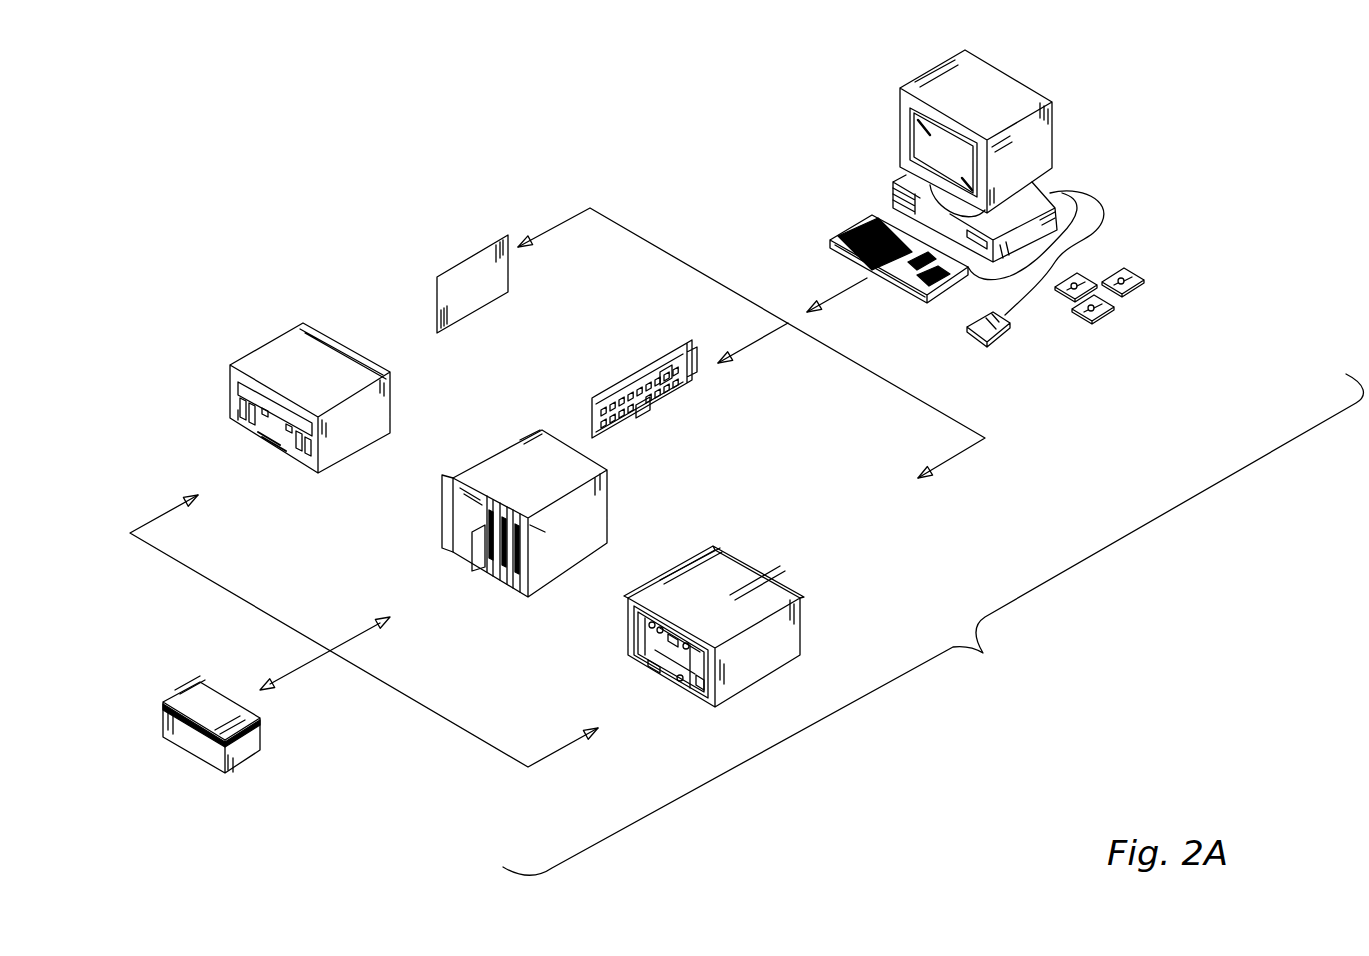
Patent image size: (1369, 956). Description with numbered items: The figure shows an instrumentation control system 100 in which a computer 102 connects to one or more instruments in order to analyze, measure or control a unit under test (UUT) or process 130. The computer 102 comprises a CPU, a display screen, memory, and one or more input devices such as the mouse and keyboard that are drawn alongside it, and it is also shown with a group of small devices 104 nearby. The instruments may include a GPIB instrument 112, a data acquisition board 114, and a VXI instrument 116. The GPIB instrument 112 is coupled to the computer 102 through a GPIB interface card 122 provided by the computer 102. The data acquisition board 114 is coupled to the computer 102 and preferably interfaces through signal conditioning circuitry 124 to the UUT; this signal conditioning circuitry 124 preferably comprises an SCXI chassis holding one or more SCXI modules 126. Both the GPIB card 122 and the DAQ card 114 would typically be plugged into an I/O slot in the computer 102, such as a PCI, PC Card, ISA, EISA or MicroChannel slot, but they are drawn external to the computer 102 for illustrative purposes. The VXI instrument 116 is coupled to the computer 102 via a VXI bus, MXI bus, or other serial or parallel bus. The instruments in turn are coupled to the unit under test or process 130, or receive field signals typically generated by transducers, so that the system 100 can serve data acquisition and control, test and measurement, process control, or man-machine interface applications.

The instrumentation control system 100 is at (746, 481).
The computer 102 is at (967, 190).
The unit under test / sensors 104 is at (1136, 274).
The GPIB instrument 112 is at (290, 378).
The data acquisition board 114 is at (625, 371).
The VXI instrument 116 is at (719, 609).
The GPIB interface card 122 is at (448, 276).
The signal conditioning circuitry 124 is at (524, 498).
The SCXI modules 126 is at (381, 562).
The unit under test (UUT) or process 130 is at (187, 738).